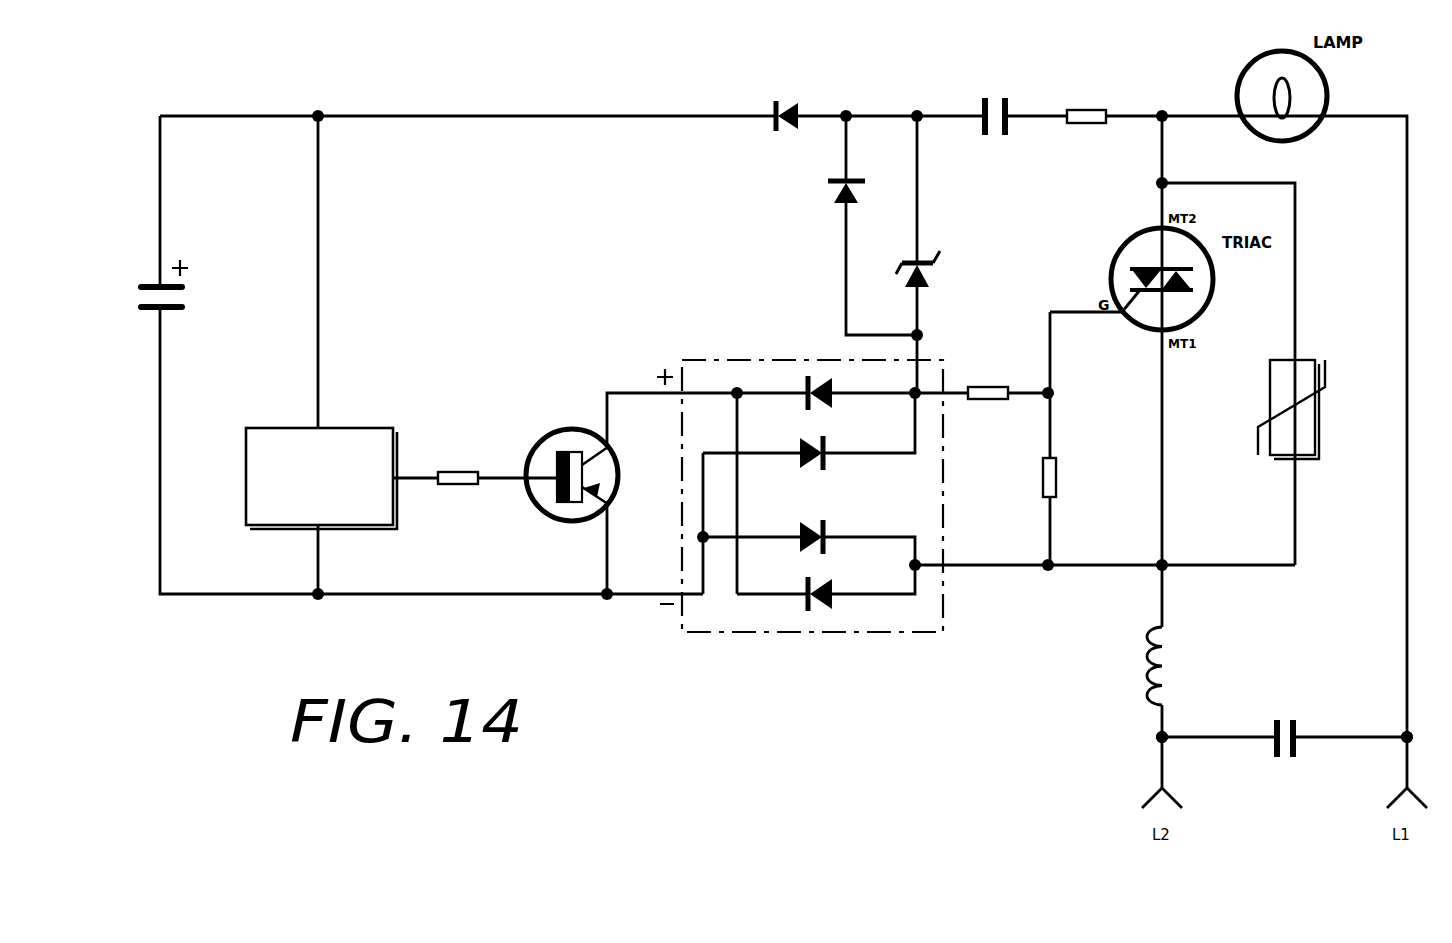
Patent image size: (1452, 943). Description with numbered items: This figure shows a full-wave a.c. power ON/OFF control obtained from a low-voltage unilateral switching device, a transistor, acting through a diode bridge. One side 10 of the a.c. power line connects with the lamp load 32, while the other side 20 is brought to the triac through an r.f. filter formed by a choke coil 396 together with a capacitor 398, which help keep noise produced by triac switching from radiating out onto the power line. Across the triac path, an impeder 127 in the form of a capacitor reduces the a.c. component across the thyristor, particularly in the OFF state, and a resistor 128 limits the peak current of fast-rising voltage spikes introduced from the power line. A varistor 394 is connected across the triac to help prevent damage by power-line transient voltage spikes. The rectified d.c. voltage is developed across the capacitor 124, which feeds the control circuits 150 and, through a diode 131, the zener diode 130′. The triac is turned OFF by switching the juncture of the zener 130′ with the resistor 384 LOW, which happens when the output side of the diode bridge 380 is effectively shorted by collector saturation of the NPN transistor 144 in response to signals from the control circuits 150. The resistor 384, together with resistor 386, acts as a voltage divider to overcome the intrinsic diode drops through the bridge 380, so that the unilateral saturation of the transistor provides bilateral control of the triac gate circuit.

The capacitor 124 is at (187, 313).
The control circuits 150 is at (358, 437).
The NPN transistor 144 is at (537, 450).
The diode bridge 380 is at (720, 372).
The diode 131 is at (836, 212).
The zener diode 130′ is at (940, 272).
The impeder 127 is at (1004, 96).
The resistor 128 is at (1097, 110).
The lamp 32 is at (1245, 72).
The varistor 394 is at (1292, 372).
The resistor 384 is at (985, 384).
The resistor 386 is at (1060, 478).
The choke coil 396 is at (1170, 665).
The capacitor 398 is at (1299, 718).
The other side of the a.c. power line 20 is at (1150, 737).
The one side of the a.c. power line 10 is at (1415, 731).